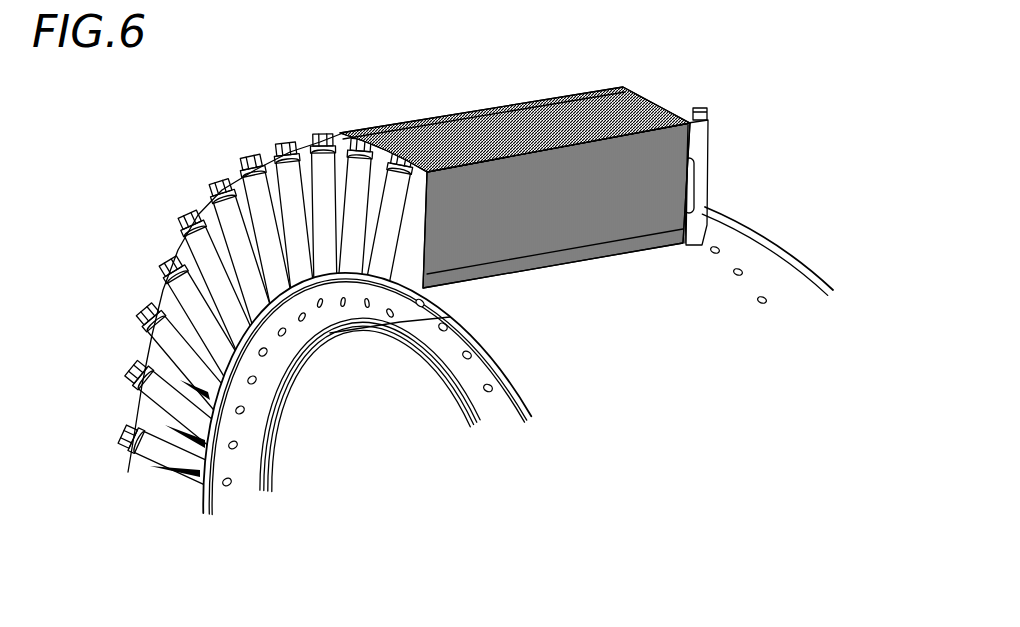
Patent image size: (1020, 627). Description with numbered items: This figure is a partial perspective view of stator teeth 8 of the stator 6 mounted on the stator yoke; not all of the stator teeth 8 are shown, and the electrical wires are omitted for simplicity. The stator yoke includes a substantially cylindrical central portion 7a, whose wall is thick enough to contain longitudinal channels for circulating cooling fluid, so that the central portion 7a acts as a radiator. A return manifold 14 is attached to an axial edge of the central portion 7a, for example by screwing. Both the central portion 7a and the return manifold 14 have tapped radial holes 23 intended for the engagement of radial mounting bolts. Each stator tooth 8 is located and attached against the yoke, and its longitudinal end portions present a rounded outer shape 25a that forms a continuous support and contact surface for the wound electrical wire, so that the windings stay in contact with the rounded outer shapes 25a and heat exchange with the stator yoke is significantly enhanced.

The stator 6 is at (194, 205).
The rounded outer shape 25a is at (312, 200).
The stator tooth 8 is at (494, 292).
The central portion 7a is at (718, 267).
The return manifold 14 is at (504, 376).
The tapped radial holes 23 is at (493, 392).